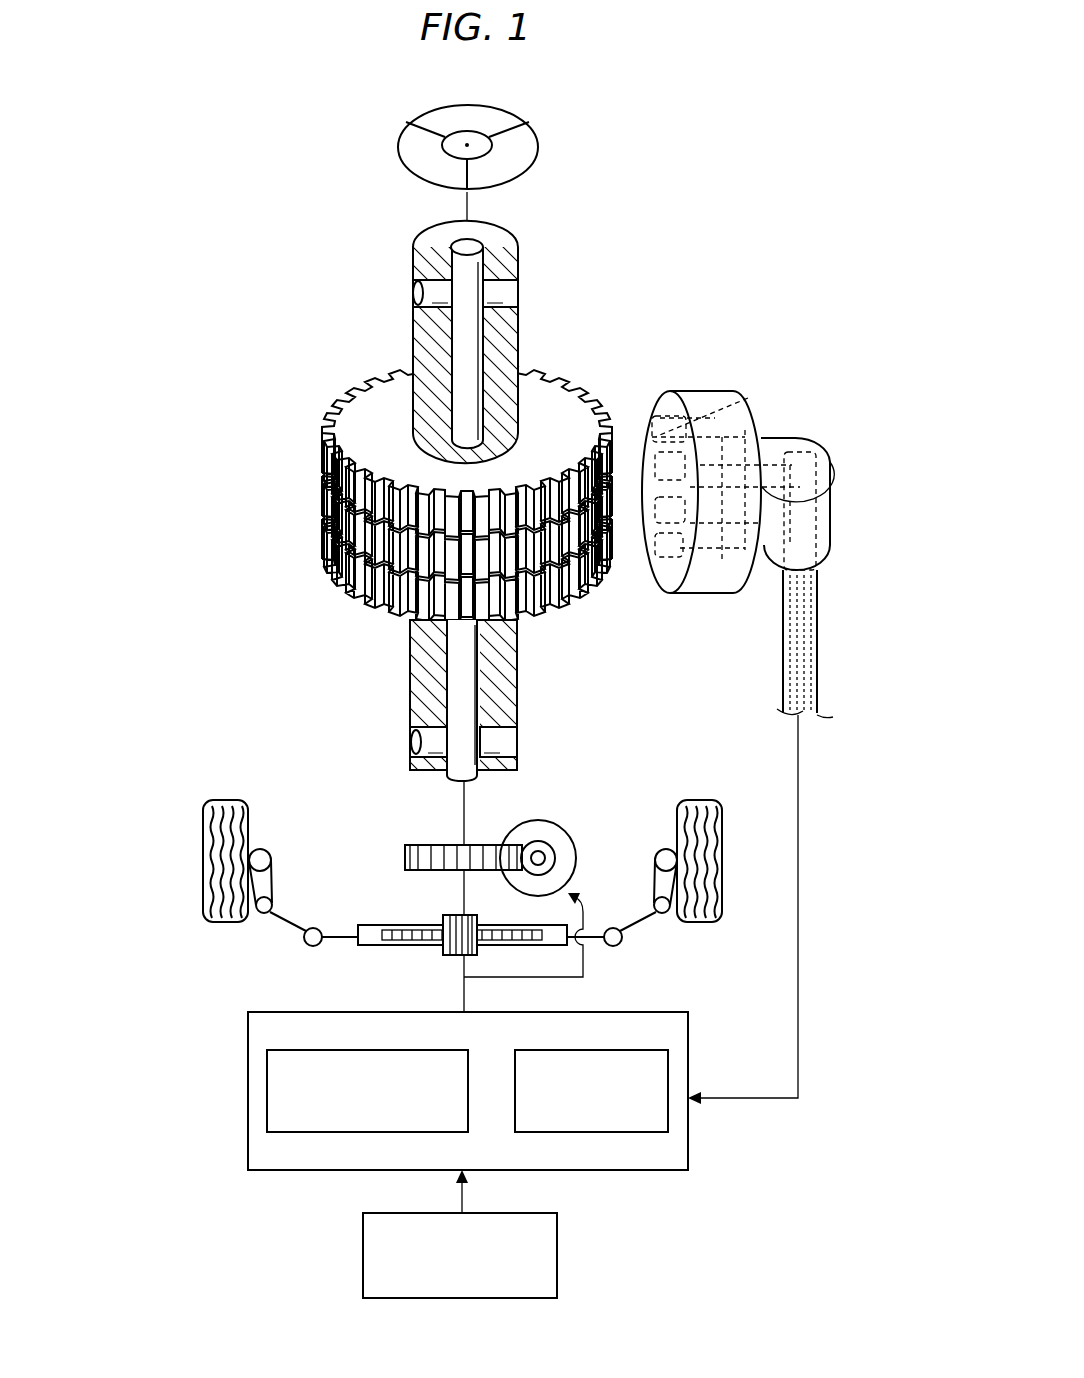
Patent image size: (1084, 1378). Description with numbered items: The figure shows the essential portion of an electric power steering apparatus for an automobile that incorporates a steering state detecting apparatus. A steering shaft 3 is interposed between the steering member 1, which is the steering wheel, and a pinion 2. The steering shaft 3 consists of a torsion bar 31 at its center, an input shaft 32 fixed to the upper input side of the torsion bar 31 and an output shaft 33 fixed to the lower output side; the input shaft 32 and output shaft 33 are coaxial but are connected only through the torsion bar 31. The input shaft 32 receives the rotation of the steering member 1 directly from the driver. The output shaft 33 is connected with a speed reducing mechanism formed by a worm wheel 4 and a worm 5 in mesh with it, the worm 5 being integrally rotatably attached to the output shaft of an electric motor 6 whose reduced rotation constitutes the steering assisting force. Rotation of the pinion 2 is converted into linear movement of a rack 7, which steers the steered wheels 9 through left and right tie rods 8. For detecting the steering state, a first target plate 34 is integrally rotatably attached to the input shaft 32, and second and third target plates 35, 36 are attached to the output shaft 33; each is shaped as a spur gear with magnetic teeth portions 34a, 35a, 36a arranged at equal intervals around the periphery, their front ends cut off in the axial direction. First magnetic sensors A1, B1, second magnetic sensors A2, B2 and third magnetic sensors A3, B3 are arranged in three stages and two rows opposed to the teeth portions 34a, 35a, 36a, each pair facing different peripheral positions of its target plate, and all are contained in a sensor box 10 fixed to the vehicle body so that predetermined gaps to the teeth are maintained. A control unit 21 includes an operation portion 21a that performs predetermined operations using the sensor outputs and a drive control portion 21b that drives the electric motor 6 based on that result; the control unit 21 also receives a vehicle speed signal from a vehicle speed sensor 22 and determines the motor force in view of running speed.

The steering member 1 is at (538, 130).
The pinion 2 is at (453, 915).
The steering shaft 3 is at (458, 344).
The worm wheel 4 is at (408, 847).
The worm 5 is at (552, 847).
The electric motor 6 is at (539, 820).
The rack 7 is at (513, 925).
The tie rods 8 is at (632, 918).
The steered wheels 9 is at (702, 800).
The sensor box 10 is at (703, 389).
The control unit 21 is at (433, 1117).
The operation portion 21a is at (649, 1132).
The drive control portion 21b is at (291, 1132).
The vehicle speed sensor 22 is at (558, 1258).
The torsion bar 31 is at (468, 372).
The input shaft 32 is at (413, 335).
The output shaft 33 is at (460, 810).
The first target plate 34 is at (371, 418).
The teeth portions 34a is at (322, 428).
The second target plate 35 is at (318, 489).
The teeth portions 35a is at (318, 527).
The third target plate 36 is at (318, 537).
The teeth portions 36a is at (380, 605).
The first magnetic sensor A1 is at (748, 398).
The second magnetic sensor A2 is at (808, 442).
The third magnetic sensor A3 is at (704, 595).
The first magnetic sensor B1 is at (635, 432).
The second magnetic sensor B2 is at (630, 516).
The third magnetic sensor B3 is at (632, 500).